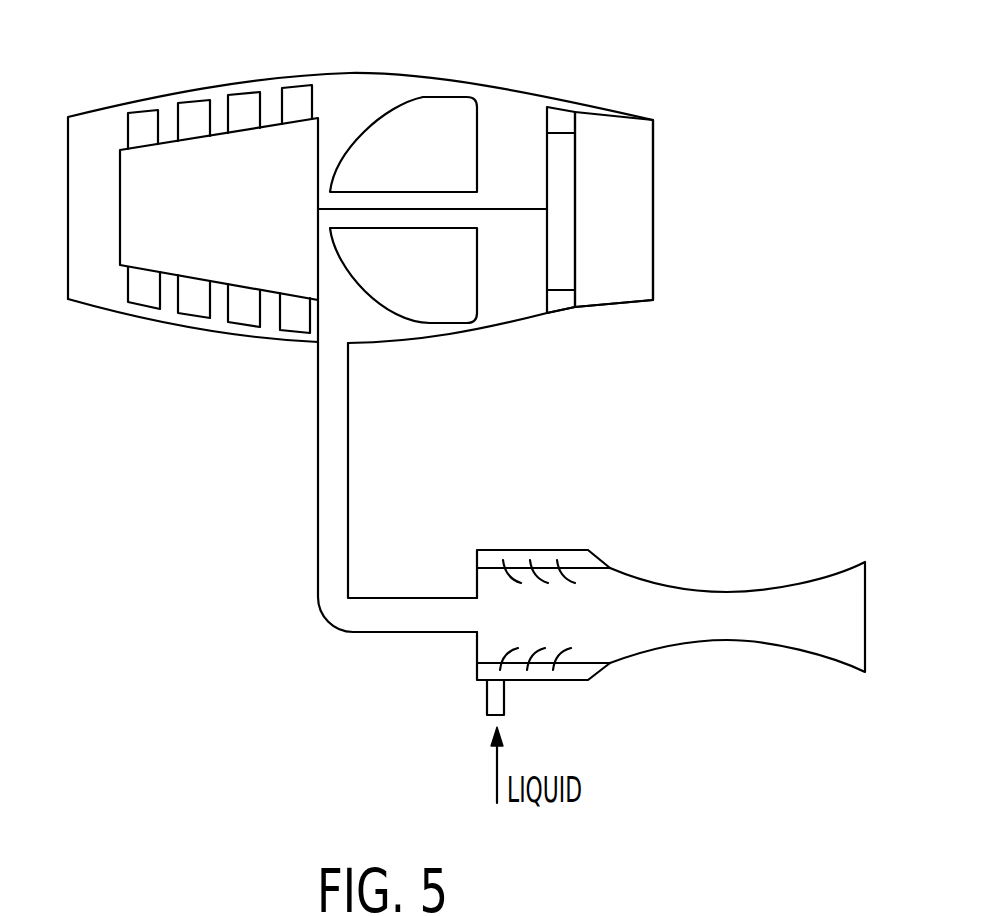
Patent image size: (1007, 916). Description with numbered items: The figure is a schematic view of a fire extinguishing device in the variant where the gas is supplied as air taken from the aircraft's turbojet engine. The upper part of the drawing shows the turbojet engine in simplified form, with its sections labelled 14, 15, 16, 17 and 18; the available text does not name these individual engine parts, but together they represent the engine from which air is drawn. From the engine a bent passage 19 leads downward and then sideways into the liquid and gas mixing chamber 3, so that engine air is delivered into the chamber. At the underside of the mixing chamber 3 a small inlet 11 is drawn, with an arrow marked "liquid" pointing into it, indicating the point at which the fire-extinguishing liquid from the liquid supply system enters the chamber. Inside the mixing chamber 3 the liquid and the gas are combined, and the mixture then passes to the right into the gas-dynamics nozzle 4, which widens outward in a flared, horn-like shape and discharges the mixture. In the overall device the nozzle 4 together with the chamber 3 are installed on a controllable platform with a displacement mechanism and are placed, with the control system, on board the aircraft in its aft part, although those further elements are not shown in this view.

The fan casing 14 is at (88, 128).
The compressor 15 is at (289, 132).
The combustor 16 is at (433, 110).
The turbine 17 is at (557, 143).
The exhaust nozzle 18 is at (633, 140).
The bleed air pipe 19 is at (338, 405).
The liquid and gas mixing chamber 3 is at (583, 593).
The gas-dynamics nozzle 4 is at (800, 597).
The liquid inlet 11 is at (482, 676).